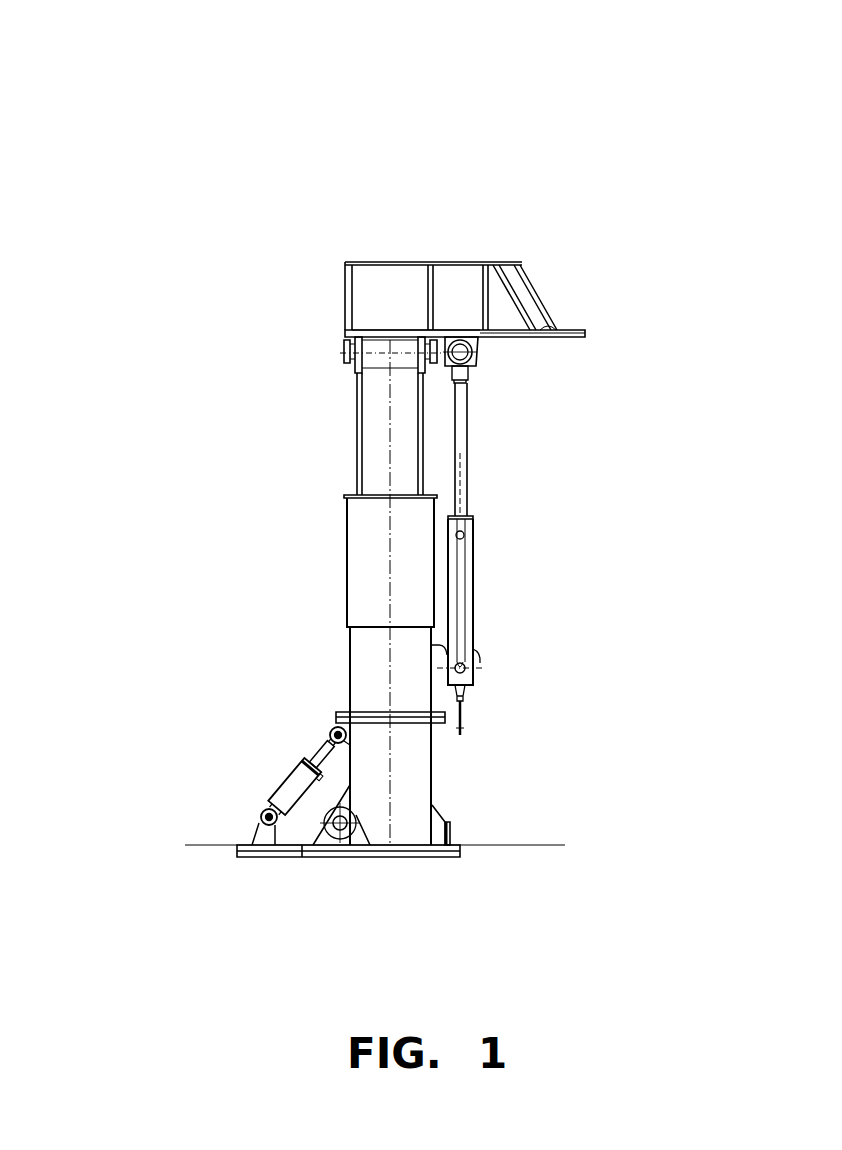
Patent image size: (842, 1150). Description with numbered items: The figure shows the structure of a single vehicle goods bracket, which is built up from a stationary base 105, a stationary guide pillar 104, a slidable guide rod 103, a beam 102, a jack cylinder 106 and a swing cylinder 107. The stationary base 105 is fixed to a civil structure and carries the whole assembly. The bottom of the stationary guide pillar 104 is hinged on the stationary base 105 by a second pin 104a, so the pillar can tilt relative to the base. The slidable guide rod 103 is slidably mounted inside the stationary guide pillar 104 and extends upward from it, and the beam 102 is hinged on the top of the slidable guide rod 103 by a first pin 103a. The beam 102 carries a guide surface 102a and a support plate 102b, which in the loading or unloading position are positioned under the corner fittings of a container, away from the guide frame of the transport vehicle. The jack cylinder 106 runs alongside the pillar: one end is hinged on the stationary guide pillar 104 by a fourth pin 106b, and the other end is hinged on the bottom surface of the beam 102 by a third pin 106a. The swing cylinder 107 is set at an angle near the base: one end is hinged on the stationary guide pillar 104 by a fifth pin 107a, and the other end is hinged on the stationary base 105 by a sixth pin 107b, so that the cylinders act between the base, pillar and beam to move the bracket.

The beam 102 is at (498, 178).
The guide surface 102a is at (527, 297).
The support plate 102b is at (577, 333).
The slidable guide rod 103 is at (362, 423).
The first pin 103a is at (382, 353).
The stationary guide pillar 104 is at (363, 548).
The second pin 104a is at (338, 826).
The stationary base 105 is at (458, 848).
The jack cylinder 106 is at (468, 428).
The third pin 106a is at (477, 355).
The fourth pin 106b is at (467, 667).
The swing cylinder 107 is at (284, 795).
The fifth pin 107a is at (330, 730).
The sixth pin 107b is at (262, 827).